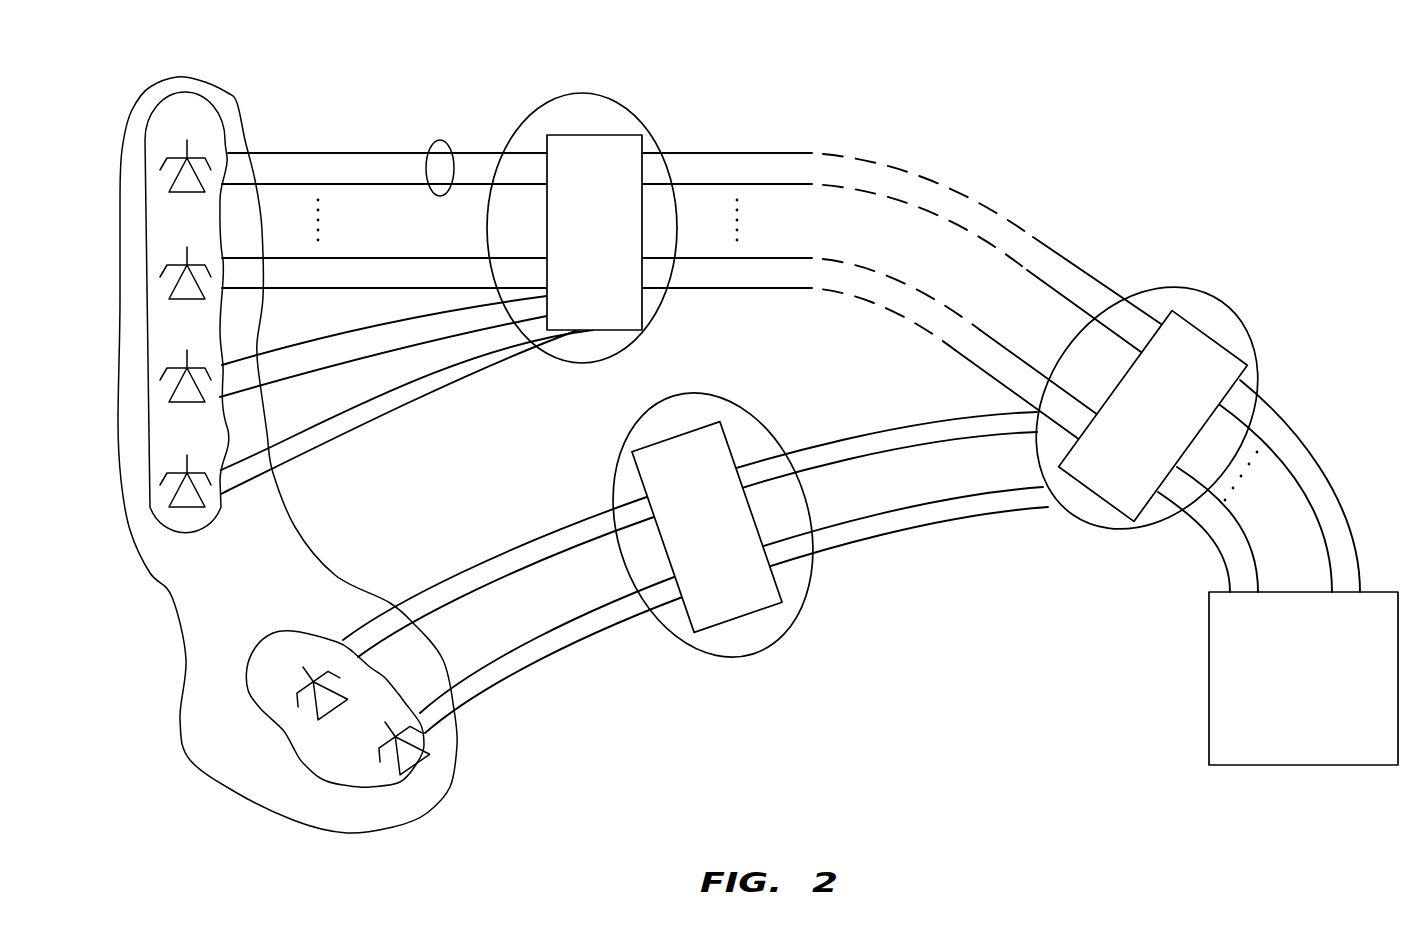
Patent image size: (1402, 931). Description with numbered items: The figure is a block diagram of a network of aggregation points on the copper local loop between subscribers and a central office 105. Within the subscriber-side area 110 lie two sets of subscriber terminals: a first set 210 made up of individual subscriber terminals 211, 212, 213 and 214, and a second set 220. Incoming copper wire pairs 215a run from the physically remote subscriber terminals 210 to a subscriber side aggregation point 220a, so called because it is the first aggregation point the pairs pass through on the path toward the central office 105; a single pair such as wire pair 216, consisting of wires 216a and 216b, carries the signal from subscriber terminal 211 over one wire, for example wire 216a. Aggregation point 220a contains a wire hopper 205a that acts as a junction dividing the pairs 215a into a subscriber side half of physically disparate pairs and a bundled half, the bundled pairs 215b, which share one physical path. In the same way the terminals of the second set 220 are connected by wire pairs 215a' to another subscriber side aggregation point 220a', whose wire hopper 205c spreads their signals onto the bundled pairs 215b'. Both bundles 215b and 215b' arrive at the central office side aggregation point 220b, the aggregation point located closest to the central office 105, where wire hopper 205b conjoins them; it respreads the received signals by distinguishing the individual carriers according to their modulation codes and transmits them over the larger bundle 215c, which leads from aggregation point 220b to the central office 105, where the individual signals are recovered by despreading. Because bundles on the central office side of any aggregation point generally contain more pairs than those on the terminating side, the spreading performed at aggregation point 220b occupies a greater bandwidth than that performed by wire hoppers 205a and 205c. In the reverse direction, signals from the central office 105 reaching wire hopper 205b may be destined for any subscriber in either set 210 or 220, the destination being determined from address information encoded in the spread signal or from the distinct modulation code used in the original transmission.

The central office 105 is at (1303, 678).
The local loop service area 110 is at (450, 790).
The subscriber terminals 210 is at (198, 92).
The subscriber terminal 211 is at (185, 152).
The subscriber 212 is at (185, 258).
The subscriber 213 is at (185, 361).
The subscriber 214 is at (185, 466).
The incoming copper wire pairs 215a is at (406, 287).
The bundled pairs 215b is at (903, 260).
The bundled pairs 215c is at (1217, 555).
The wire pairs from second group 215a' is at (523, 616).
The bundled pairs 215b' is at (844, 507).
The wire pair 216 is at (438, 140).
The wire 216a is at (473, 152).
The second wire of pair 216b is at (505, 186).
The set of subscriber terminals 220 is at (275, 736).
The subscriber side aggregation point 220a is at (582, 196).
The central office side aggregation point 220b is at (1200, 285).
The subscriber side aggregation point 220a' is at (713, 550).
The wire hopper 205a is at (594, 232).
The wire hopper 205b is at (1153, 416).
The wire hopper 205c is at (707, 527).